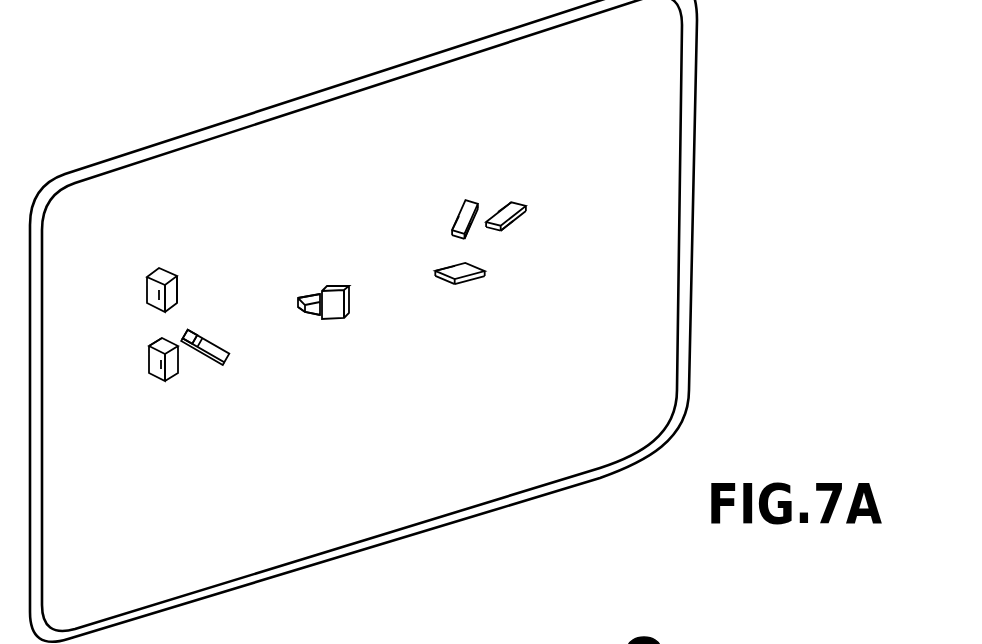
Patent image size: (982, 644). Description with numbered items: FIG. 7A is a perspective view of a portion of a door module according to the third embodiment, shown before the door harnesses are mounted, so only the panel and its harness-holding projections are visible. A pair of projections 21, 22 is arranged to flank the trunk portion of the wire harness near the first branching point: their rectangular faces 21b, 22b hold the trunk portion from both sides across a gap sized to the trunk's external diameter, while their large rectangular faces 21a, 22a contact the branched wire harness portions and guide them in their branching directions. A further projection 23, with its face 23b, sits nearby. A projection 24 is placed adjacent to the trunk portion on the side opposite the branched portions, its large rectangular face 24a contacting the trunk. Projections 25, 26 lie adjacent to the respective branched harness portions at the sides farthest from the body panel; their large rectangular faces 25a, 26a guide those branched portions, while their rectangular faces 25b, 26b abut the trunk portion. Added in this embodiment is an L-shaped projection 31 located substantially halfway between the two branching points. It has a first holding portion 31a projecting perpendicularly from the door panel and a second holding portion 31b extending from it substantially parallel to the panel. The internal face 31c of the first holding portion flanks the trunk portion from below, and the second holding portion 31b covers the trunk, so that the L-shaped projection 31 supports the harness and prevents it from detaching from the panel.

The projection 21 is at (148, 283).
The large rectangular face 21a is at (183, 313).
The rectangular face 21b is at (184, 313).
The projection 22 is at (150, 364).
The large rectangular face 22a is at (183, 378).
The rectangular face 22b is at (152, 340).
The projection 23 is at (231, 358).
The rectangular face 23b is at (189, 333).
The projection 24 is at (467, 286).
The large rectangular face 24a is at (450, 268).
The projection 25 is at (467, 200).
The large rectangular face 25a is at (452, 223).
The rectangular face 25b is at (468, 238).
The projection 26 is at (525, 206).
The large rectangular face 26a is at (505, 204).
The rectangular face 26b is at (497, 232).
The L-shaped projection 31 is at (340, 320).
The first holding portion 31a is at (306, 317).
The second holding portion 31b is at (345, 306).
The internal face 31c is at (302, 298).